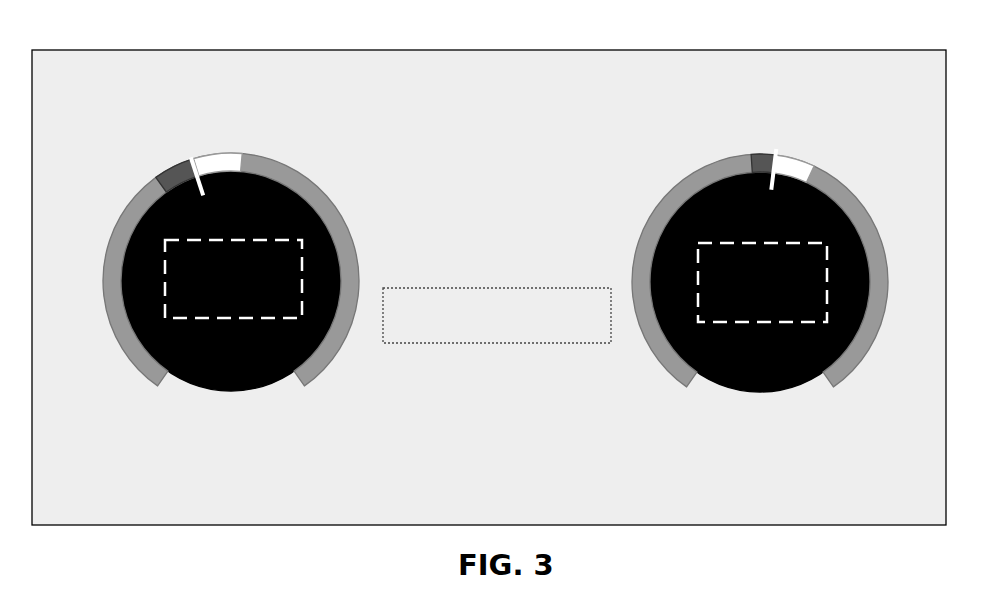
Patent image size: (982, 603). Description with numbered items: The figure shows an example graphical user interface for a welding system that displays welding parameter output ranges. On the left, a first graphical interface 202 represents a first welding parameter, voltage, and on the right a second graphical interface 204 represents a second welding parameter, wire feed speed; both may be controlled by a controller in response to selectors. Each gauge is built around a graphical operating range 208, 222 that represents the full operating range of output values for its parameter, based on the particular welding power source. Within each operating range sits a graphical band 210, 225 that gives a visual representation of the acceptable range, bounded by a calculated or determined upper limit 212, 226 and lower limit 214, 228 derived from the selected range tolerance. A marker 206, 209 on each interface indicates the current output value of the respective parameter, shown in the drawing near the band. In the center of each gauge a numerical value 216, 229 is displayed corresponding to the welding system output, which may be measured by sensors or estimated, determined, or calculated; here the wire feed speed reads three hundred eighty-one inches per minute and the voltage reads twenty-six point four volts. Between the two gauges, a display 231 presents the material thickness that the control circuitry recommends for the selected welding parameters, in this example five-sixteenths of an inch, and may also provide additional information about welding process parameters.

The first graphical interface 202 is at (108, 92).
The second graphical interface 204 is at (668, 94).
The marker 206 is at (180, 148).
The graphical operating range 208 is at (128, 353).
The graphical band 210 is at (170, 162).
The upper limit 212 is at (258, 152).
The lower limit 214 is at (146, 177).
The numerical value 216 is at (240, 240).
The marker 209 is at (790, 138).
The graphical operating range 222 is at (645, 341).
The graphical band 225 is at (765, 145).
The upper limit 226 is at (833, 160).
The lower limit 228 is at (740, 153).
The numerical value 229 is at (762, 243).
The display 231 is at (463, 287).